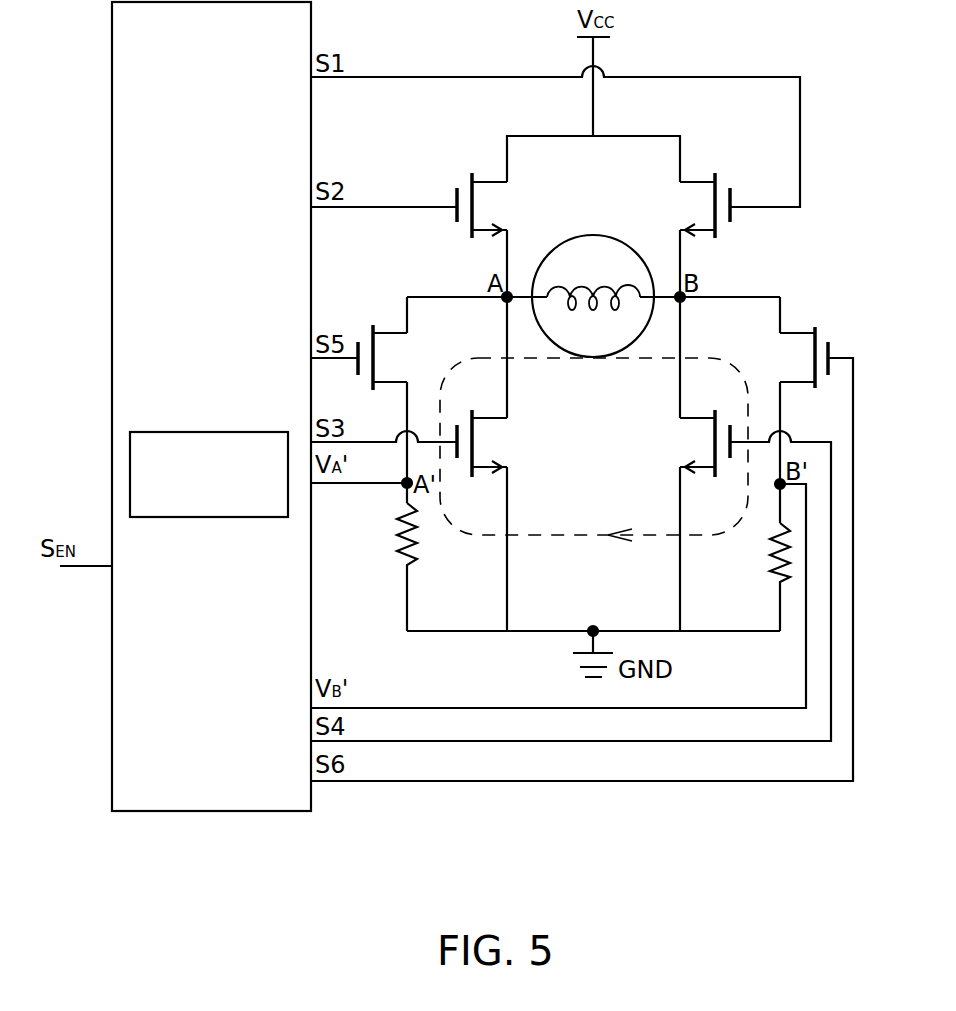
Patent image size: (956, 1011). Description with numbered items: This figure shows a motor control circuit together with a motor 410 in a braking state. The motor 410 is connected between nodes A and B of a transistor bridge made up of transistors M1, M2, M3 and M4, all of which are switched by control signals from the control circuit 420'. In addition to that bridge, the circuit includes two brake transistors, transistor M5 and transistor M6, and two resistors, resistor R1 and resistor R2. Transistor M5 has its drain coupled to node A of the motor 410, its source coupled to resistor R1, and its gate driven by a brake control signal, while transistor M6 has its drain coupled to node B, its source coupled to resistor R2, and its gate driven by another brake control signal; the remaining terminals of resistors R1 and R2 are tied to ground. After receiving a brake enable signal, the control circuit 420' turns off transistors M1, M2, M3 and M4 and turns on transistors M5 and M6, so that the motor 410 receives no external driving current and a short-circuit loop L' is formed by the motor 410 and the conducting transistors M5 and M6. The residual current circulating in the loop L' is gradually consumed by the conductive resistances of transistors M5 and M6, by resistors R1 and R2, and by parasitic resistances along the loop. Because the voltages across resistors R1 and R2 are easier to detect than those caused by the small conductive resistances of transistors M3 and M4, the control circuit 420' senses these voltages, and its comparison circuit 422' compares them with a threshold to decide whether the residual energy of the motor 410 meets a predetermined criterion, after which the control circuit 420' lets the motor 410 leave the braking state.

The motor 410 is at (593, 234).
The control circuit 420' is at (211, 445).
The comparison circuit 422' is at (209, 515).
The transistor M1 is at (710, 190).
The transistor M2 is at (481, 190).
The transistor M3 is at (482, 431).
The transistor M4 is at (708, 431).
The transistor M5 is at (374, 357).
The transistor M6 is at (582, 554).
The resistor R1 is at (426, 567).
The resistor R2 is at (761, 577).
The short-circuit loop L' is at (594, 449).